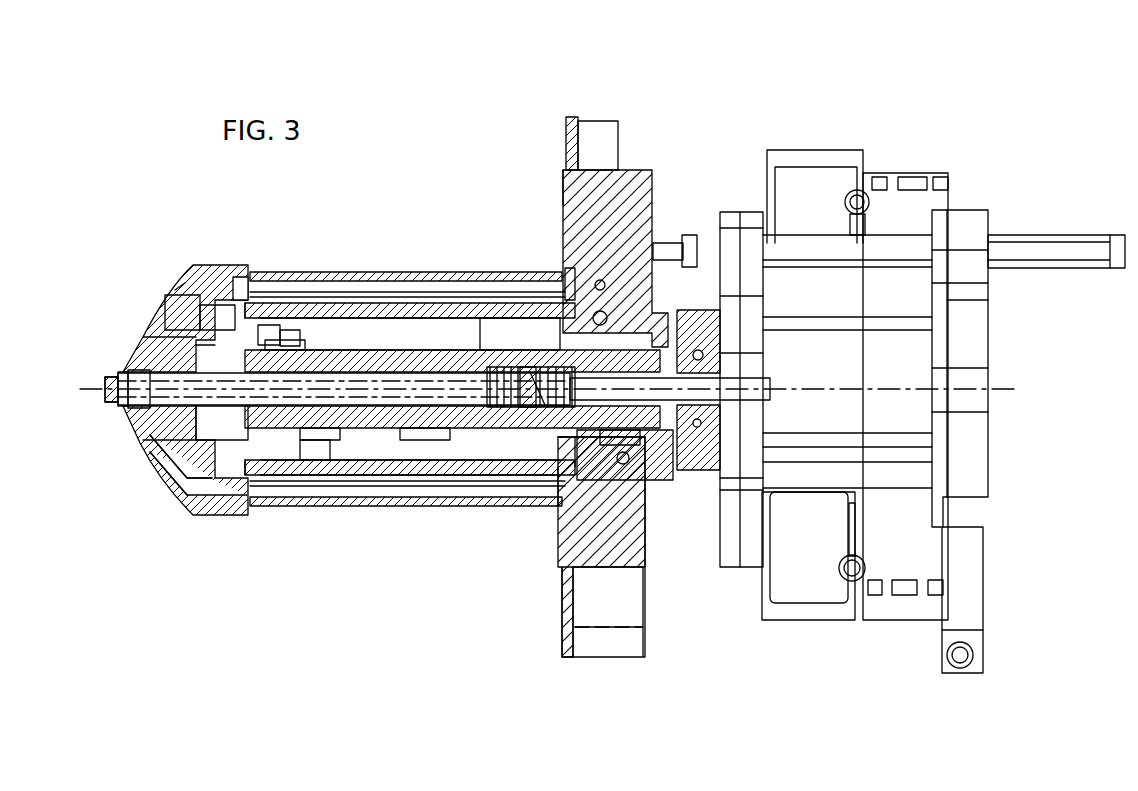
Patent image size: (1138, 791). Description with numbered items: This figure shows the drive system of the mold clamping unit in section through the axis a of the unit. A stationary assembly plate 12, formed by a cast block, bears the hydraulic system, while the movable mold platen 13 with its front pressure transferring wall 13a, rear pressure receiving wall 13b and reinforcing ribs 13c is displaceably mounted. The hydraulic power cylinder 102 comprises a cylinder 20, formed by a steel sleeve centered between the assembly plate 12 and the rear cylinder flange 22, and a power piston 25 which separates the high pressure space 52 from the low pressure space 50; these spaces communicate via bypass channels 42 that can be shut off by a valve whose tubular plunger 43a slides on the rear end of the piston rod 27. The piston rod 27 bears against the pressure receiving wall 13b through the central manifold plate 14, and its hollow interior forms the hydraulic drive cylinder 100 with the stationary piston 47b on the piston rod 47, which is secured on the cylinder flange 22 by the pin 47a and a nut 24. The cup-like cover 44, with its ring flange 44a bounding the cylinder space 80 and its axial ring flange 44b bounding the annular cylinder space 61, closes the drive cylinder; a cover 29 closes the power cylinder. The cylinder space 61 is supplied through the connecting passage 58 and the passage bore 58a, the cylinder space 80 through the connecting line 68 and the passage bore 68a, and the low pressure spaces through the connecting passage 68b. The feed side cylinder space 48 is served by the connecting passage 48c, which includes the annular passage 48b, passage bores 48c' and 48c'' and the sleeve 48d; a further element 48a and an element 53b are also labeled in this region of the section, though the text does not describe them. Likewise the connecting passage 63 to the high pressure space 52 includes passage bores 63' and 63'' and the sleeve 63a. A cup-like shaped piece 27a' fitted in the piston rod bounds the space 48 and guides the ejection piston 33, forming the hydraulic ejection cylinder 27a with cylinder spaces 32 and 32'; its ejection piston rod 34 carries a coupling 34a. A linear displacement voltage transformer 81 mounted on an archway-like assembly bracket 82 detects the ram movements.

The axis of the mold clamping unit a is at (553, 389).
The assembly plate 12 is at (602, 147).
The movable mold platen 13 is at (828, 98).
The front pressure transferring wall 13a is at (970, 310).
The rear pressure receiving wall 13b is at (742, 218).
The reinforcing ribs 13c is at (895, 290).
The central manifold plate 14 is at (690, 310).
The cylinder 20 is at (350, 465).
The rear cylinder flange 22 is at (190, 330).
The nut 24 is at (110, 401).
The power piston 25 is at (268, 335).
The piston rod 27 is at (460, 340).
The hydraulic ejection cylinder 27a is at (648, 467).
The cup-like shaped piece 27a' is at (543, 363).
The cover of the power cylinder 29 is at (555, 510).
The cylinder space of the ejection cylinder 32 is at (556, 408).
The cylinder space of the ejection cylinder 32' is at (498, 411).
The ejection piston 33 is at (540, 405).
The ejection piston rod 34 is at (778, 165).
The coupling 34a is at (835, 250).
The bypass channels 42 is at (290, 335).
The tubular plunger 43a is at (235, 430).
The cup-like cover 44 is at (160, 350).
The ring flange 44a is at (150, 360).
The axial ring flange 44b is at (170, 330).
The piston rod 47 is at (373, 400).
The pin 47a is at (100, 385).
The stationary piston 47b is at (490, 405).
The cylinder space 48 is at (530, 395).
The sleeve portion 48a is at (410, 375).
The annular passage 48b is at (145, 410).
The connecting passage 48c is at (410, 511).
The passage bore 48c' is at (529, 527).
The passage bore 48c'' is at (169, 487).
The sleeve 48d is at (280, 500).
The low pressure space 50 is at (328, 450).
The high pressure space 52 is at (180, 300).
The bolt 53b is at (630, 465).
The connecting passage 58 is at (400, 350).
The passage bore 58a is at (655, 350).
The cylinder space 61 is at (203, 325).
The connecting passage 63 is at (406, 358).
The passage bore 63' is at (541, 190).
The passage bore 63'' is at (218, 255).
The sleeve 63a is at (475, 280).
The connecting line 68 is at (415, 420).
The passage bore 68a is at (697, 425).
The connecting passage 68b is at (540, 340).
The cylinder space 80 is at (375, 365).
The linear displacement voltage transformer 81 is at (1060, 250).
The assembly bracket 82 is at (940, 175).
The hydraulic drive cylinder 100 is at (305, 390).
The hydraulic power cylinder 102 is at (310, 440).